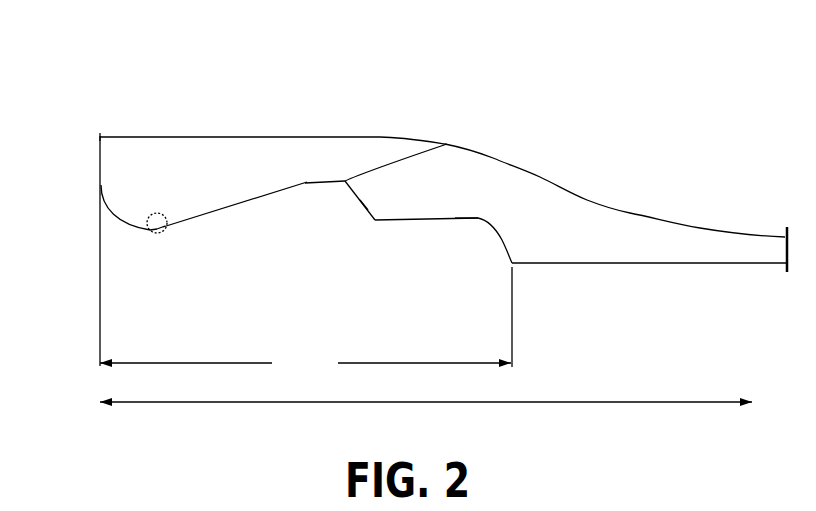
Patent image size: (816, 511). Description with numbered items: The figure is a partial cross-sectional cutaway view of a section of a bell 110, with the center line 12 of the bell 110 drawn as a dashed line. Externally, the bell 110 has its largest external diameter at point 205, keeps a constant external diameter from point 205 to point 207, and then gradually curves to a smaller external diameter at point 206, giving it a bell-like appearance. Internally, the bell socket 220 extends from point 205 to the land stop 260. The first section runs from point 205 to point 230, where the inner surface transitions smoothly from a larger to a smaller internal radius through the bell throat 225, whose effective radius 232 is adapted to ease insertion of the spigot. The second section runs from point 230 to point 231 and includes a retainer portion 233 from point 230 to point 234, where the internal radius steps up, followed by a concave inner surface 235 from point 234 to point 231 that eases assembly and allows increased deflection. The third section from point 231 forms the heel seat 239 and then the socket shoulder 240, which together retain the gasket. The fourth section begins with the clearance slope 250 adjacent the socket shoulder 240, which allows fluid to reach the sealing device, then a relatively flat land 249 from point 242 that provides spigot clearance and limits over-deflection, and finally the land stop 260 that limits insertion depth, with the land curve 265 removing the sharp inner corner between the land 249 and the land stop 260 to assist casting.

The bell 110 is at (243, 75).
The point 205 is at (100, 136).
The point 206 is at (781, 248).
The point 207 is at (388, 138).
The bell throat 225 is at (100, 200).
The radius 232 is at (128, 199).
The point 230 is at (158, 234).
The retainer portion 233 is at (153, 233).
The point 234 is at (163, 229).
The concave inner surface 235 is at (254, 203).
The point 231 is at (308, 184).
The heel seat 239 is at (420, 160).
The socket shoulder 240 is at (346, 182).
The clearance slope 250 is at (368, 205).
The point 242 is at (375, 221).
The land 249 is at (467, 218).
The land curve 265 is at (502, 238).
The land stop 260 is at (512, 264).
The bell socket 220 is at (306, 320).
The center line 12 is at (177, 402).